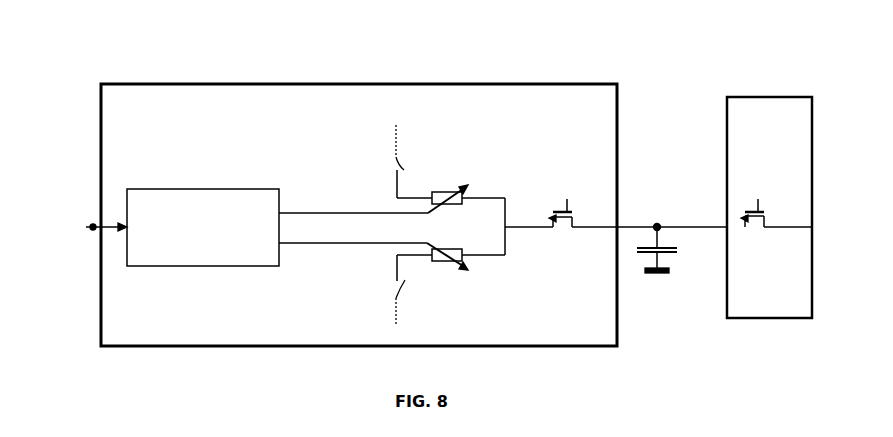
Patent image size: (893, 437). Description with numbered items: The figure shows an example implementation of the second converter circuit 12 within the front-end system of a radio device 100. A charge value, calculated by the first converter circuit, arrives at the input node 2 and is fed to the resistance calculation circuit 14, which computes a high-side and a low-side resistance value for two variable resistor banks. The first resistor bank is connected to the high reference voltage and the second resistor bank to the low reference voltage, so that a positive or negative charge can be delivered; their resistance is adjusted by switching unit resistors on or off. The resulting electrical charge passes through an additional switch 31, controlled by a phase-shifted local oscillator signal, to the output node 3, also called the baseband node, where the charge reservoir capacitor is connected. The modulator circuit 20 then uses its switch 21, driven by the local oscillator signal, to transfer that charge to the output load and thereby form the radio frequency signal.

The radio device 100 is at (75, 76).
The input node 2 is at (92, 224).
The resistance calculation circuit 14 is at (203, 227).
The second converter circuit 12 is at (416, 217).
The additional switch 31 is at (562, 230).
The output node 3 is at (660, 223).
The modulator circuit 20 is at (769, 207).
The switch 21 is at (755, 230).